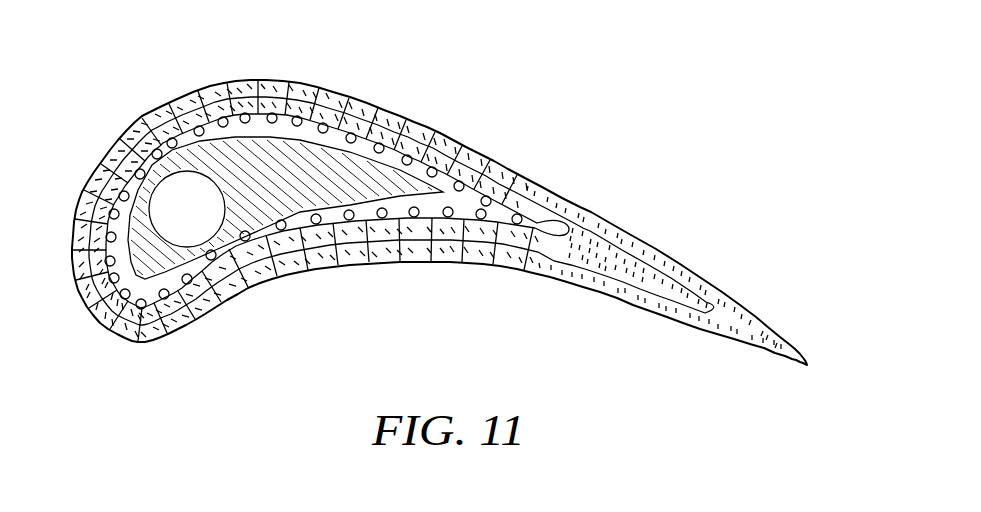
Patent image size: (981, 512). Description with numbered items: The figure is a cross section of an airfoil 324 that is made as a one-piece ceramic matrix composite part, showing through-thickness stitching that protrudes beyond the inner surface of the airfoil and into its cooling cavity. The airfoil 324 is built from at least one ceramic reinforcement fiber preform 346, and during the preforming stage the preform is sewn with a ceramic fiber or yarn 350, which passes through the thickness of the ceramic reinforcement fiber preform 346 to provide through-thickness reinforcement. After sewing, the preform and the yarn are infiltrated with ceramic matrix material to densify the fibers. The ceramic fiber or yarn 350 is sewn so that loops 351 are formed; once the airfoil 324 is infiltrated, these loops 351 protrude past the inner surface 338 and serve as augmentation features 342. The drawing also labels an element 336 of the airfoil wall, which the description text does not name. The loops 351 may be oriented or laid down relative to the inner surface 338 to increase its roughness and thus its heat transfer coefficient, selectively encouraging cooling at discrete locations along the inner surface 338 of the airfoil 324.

The airfoil 324 is at (577, 167).
The outer ply layer 336 is at (168, 118).
The inner surface 338 is at (125, 183).
The augmentation features 342 is at (444, 160).
The ceramic reinforcement fiber preform 346 is at (663, 236).
The ceramic fiber or yarn 350 is at (298, 275).
The loops 351 is at (366, 120).